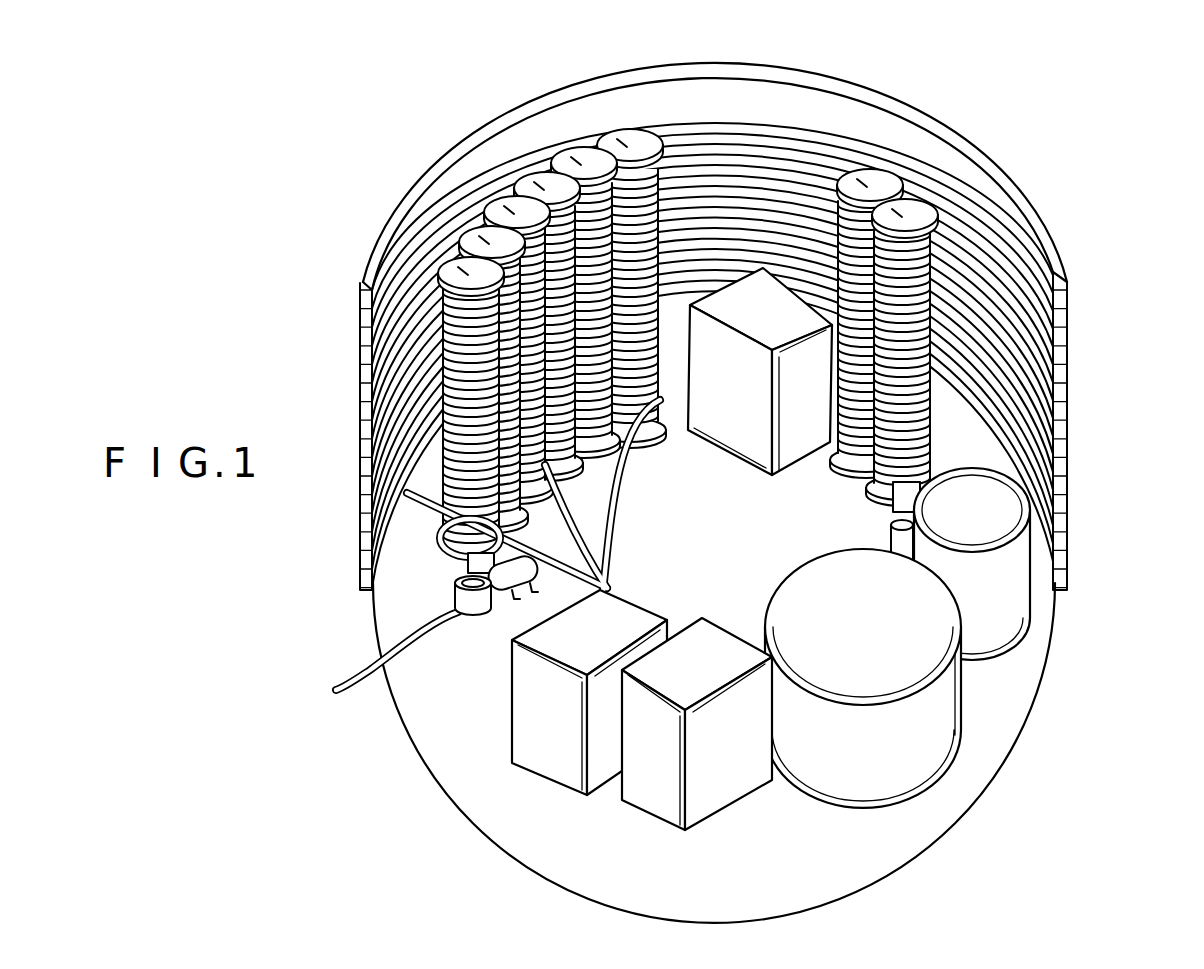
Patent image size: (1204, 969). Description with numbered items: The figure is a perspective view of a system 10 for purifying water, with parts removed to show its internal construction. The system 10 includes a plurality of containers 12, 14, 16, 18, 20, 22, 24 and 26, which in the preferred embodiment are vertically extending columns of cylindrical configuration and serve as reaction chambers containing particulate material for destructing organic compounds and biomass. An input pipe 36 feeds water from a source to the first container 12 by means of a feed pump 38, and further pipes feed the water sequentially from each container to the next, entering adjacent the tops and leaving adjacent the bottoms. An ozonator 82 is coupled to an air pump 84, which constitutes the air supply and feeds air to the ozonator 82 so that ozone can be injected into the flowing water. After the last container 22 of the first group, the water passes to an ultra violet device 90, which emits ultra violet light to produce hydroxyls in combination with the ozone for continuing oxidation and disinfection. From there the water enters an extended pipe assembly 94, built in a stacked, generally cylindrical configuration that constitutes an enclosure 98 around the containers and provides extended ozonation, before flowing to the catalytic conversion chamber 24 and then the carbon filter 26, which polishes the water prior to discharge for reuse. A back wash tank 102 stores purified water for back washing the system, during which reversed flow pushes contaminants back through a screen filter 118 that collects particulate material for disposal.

The system for purifying water 10 is at (1067, 230).
The first container 12 is at (465, 268).
The container 14 is at (484, 238).
The container 16 is at (512, 214).
The container 18 is at (548, 176).
The container 20 is at (584, 155).
The last container of the first group 22 is at (630, 134).
The catalytic conversion chamber 24 is at (878, 170).
The carbon filter 26 is at (908, 203).
The input pipe 36 is at (362, 684).
The feed pump 38 is at (467, 557).
The ozonator 82 is at (540, 768).
The air pump 84 is at (650, 805).
The ultra violet device 90 is at (758, 290).
The extended pipe assembly 94 is at (1070, 354).
The enclosure 98 is at (1092, 460).
The back wash tank 102 is at (962, 706).
The screen filter 118 is at (1030, 606).